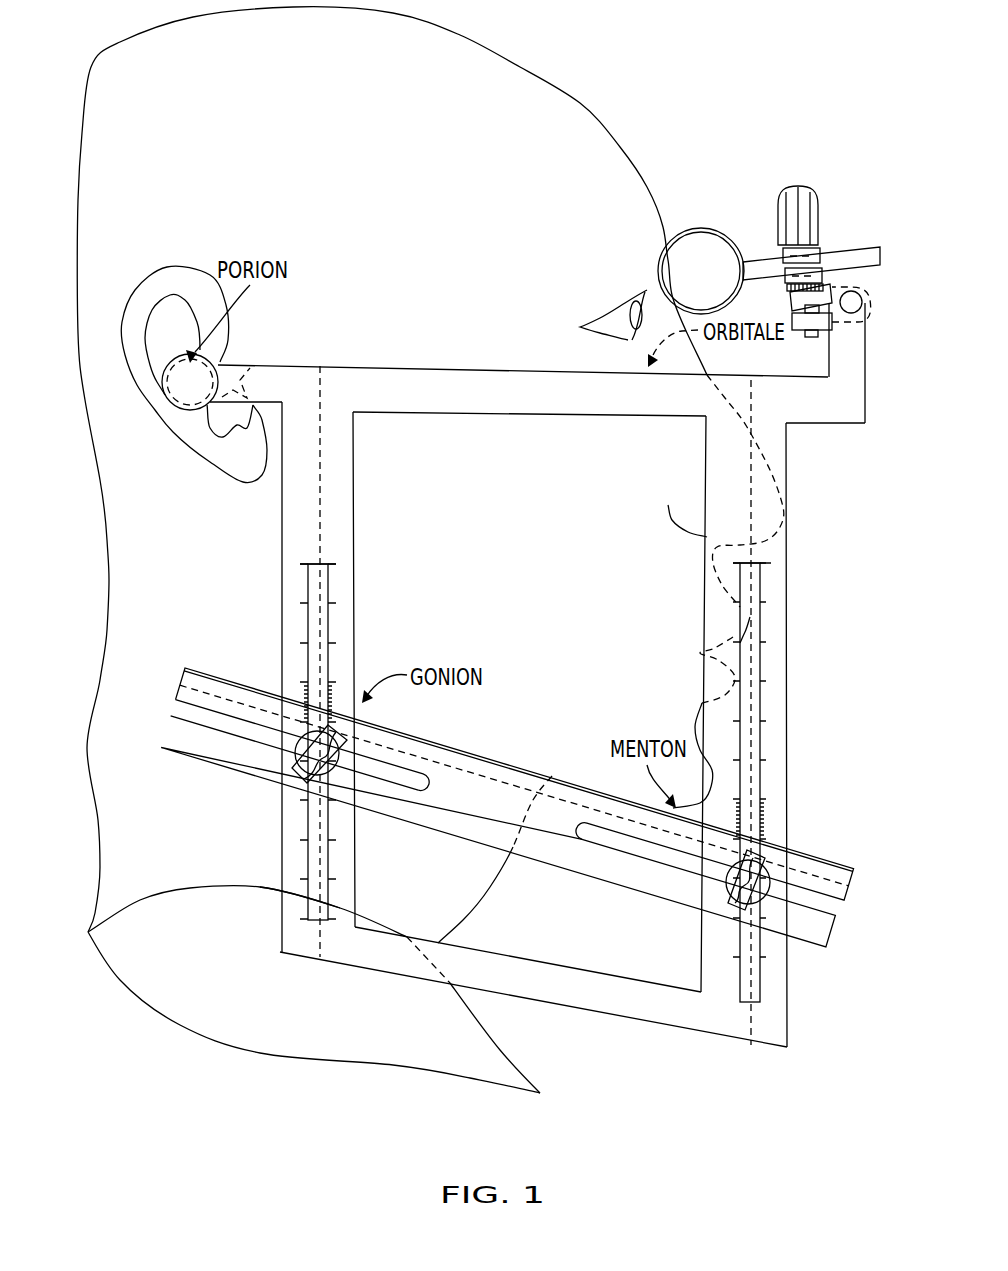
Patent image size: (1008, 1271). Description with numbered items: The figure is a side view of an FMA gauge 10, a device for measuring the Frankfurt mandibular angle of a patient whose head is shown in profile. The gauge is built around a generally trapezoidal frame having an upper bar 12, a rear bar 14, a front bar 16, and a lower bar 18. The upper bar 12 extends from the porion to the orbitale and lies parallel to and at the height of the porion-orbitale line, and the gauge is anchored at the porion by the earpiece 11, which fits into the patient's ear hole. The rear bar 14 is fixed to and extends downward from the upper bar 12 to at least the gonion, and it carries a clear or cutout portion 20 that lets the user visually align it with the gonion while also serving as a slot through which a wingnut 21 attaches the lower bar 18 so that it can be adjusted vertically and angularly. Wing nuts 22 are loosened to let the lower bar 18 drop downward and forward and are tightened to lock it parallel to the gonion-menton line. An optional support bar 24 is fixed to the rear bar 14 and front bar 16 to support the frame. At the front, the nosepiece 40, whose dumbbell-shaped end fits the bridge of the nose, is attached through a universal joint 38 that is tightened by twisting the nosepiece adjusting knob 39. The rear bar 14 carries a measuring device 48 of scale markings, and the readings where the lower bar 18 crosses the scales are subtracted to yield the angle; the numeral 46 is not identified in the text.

The FMA gauge 10 is at (334, 312).
The earpiece 11 is at (192, 412).
The upper bar 12 is at (420, 363).
The rear bar 14 is at (280, 500).
The front bar 16 is at (789, 607).
The lower bar 18 is at (543, 856).
The cutout portion 20 is at (695, 250).
The wingnut 21 is at (347, 740).
The wing nuts 22 is at (180, 707).
The support bar 24 is at (387, 967).
The universal joint 38 is at (822, 250).
The nosepiece adjusting knob 39 is at (800, 190).
The nosepiece 40 is at (768, 258).
The right measuring scale 46 is at (782, 665).
The measuring device 48 is at (357, 622).